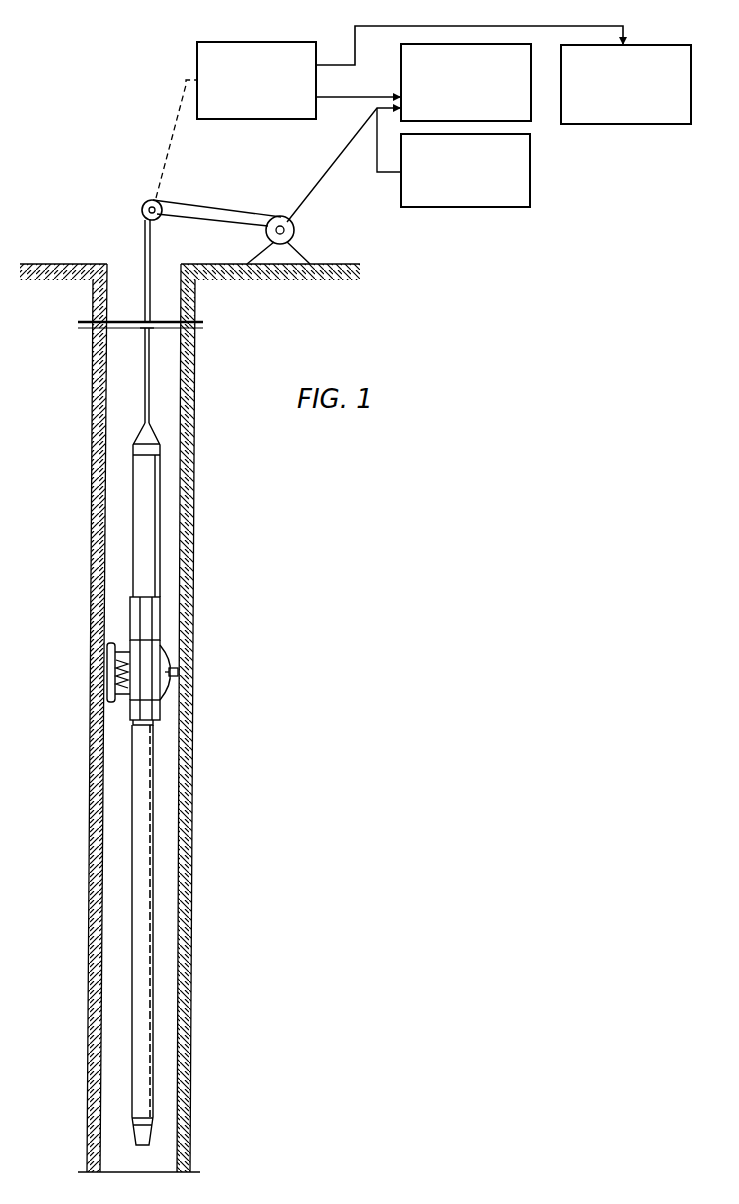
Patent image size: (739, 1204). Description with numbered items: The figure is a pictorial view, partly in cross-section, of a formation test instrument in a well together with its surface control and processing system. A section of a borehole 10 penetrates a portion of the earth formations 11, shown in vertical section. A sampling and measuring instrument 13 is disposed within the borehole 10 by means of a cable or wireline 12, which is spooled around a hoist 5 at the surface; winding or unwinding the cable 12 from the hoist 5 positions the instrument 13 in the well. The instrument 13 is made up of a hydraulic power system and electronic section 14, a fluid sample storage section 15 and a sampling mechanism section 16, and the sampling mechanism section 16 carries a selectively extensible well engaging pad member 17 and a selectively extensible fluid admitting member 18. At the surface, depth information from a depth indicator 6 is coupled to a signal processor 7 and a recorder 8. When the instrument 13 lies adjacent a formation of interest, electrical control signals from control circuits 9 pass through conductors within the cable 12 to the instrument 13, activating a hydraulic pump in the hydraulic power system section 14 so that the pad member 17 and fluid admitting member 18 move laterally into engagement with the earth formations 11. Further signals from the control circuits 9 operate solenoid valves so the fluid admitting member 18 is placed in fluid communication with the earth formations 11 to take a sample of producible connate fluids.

The hoist 5 is at (295, 230).
The depth indicator 6 is at (250, 42).
The signal processor 7 is at (401, 70).
The recorder 8 is at (645, 45).
The control circuits 9 is at (531, 190).
The borehole 10 is at (112, 387).
The earth formations 11 is at (56, 799).
The cable 12 is at (150, 380).
The sampling and measuring instrument 13 is at (163, 474).
The hydraulic power system and electronic section 14 is at (160, 531).
The fluid sample storage section 15 is at (138, 936).
The sampling mechanism section 16 is at (160, 615).
The well engaging pad member 17 is at (105, 678).
The fluid admitting member 18 is at (185, 656).